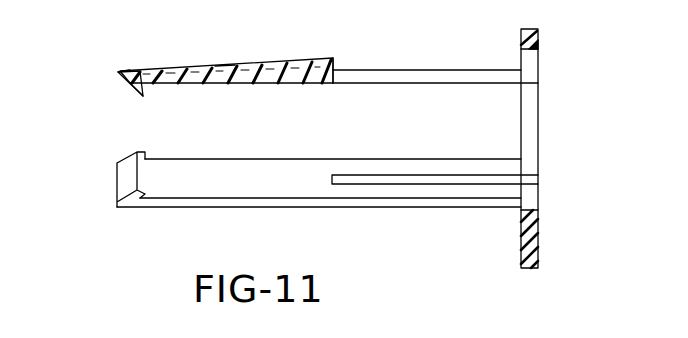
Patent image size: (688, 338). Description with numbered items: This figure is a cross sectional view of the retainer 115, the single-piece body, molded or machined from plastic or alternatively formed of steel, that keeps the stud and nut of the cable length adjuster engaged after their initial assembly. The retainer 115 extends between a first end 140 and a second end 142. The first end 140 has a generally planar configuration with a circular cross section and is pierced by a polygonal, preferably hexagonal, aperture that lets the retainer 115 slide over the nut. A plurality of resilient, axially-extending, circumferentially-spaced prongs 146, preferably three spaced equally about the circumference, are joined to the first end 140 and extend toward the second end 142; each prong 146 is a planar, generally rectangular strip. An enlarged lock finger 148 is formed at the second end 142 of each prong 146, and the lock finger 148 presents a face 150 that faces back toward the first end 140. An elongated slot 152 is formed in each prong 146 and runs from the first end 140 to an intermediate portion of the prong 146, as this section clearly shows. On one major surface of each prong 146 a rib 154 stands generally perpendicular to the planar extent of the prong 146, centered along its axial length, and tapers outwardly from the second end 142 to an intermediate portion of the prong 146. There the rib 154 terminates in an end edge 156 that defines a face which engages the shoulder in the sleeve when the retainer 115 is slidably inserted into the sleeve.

The retainer 115 is at (353, 22).
The first end 140 is at (539, 52).
The second end 142 is at (117, 72).
The prongs 146 is at (502, 33).
The lock finger 148 is at (138, 74).
The face 150 is at (140, 90).
The elongated slot 152 is at (444, 183).
The rib 154 is at (232, 40).
The end edge 156 is at (339, 68).